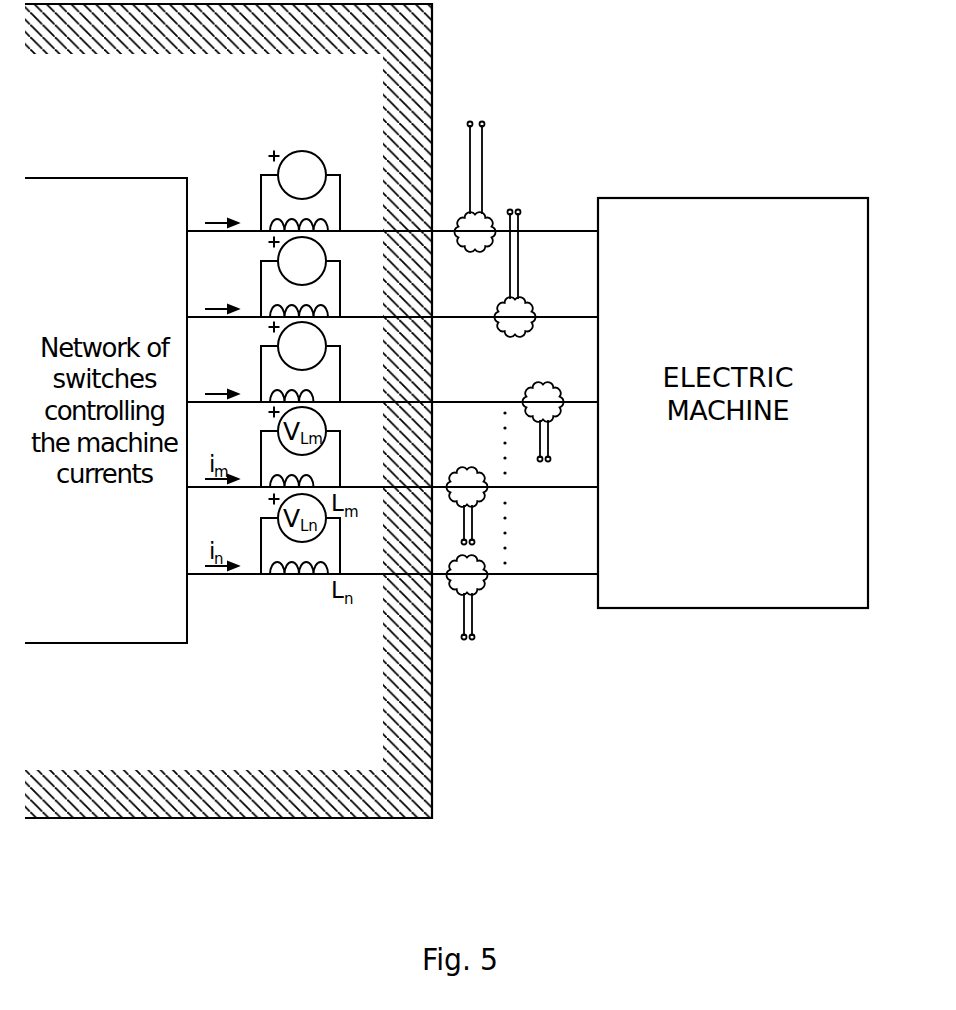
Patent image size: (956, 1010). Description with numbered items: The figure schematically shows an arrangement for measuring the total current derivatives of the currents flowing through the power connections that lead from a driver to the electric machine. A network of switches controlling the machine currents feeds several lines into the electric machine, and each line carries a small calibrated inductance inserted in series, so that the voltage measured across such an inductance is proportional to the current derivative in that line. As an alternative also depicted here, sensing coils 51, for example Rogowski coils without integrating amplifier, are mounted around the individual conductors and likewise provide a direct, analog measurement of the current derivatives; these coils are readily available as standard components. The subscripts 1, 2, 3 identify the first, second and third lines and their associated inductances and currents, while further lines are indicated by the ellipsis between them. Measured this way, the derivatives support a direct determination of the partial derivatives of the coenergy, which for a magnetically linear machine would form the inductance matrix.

The sensing coil 51 is at (483, 167).
The phase 1 branch (inductor L1, current i1, voltage meter VL1) 1 is at (392, 208).
The phase 2 branch (inductor L2, current i2, voltage meter VL2) 2 is at (392, 294).
The phase 3 branch (inductor L3, current i3, voltage meter VL3) 3 is at (392, 379).